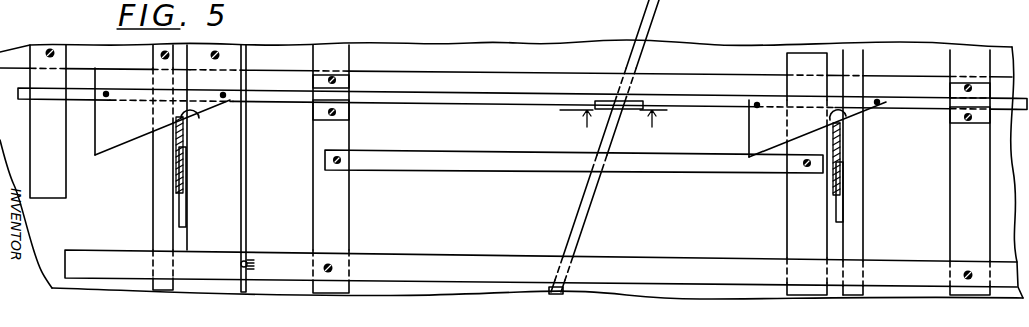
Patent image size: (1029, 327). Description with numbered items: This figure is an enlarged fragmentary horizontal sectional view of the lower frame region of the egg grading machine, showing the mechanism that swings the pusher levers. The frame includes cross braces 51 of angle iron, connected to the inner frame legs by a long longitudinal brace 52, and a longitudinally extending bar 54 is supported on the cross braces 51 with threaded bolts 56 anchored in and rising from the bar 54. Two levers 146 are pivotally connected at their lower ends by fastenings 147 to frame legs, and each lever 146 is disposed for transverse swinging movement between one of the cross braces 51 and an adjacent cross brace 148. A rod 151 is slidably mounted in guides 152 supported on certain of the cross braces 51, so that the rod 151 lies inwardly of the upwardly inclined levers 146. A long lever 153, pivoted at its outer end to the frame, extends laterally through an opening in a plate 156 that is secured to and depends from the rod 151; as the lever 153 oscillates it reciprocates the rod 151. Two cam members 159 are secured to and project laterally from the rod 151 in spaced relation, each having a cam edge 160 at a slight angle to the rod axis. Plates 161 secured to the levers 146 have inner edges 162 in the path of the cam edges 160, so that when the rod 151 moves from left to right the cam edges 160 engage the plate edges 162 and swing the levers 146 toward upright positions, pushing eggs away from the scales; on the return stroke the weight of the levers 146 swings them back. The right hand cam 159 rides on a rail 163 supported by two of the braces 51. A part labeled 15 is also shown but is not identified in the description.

The spacing between pointer and rod 15 is at (614, 130).
The cross braces 51 is at (962, 205).
The long brace 52 is at (510, 60).
The longitudinally extending bar 54 is at (496, 258).
The threaded bolts 56 is at (257, 255).
The levers 146 is at (845, 176).
The fastenings 147 is at (210, 184).
The cross brace 148 is at (857, 160).
The rod 151 is at (537, 97).
The guides 152 is at (350, 103).
The long lever 153 is at (589, 211).
The plate 156 is at (637, 100).
The cam members 159 is at (774, 112).
The cam edges 160 is at (490, 151).
The plates 161 is at (838, 150).
The inner edges 162 is at (847, 110).
The rail 163 is at (700, 158).